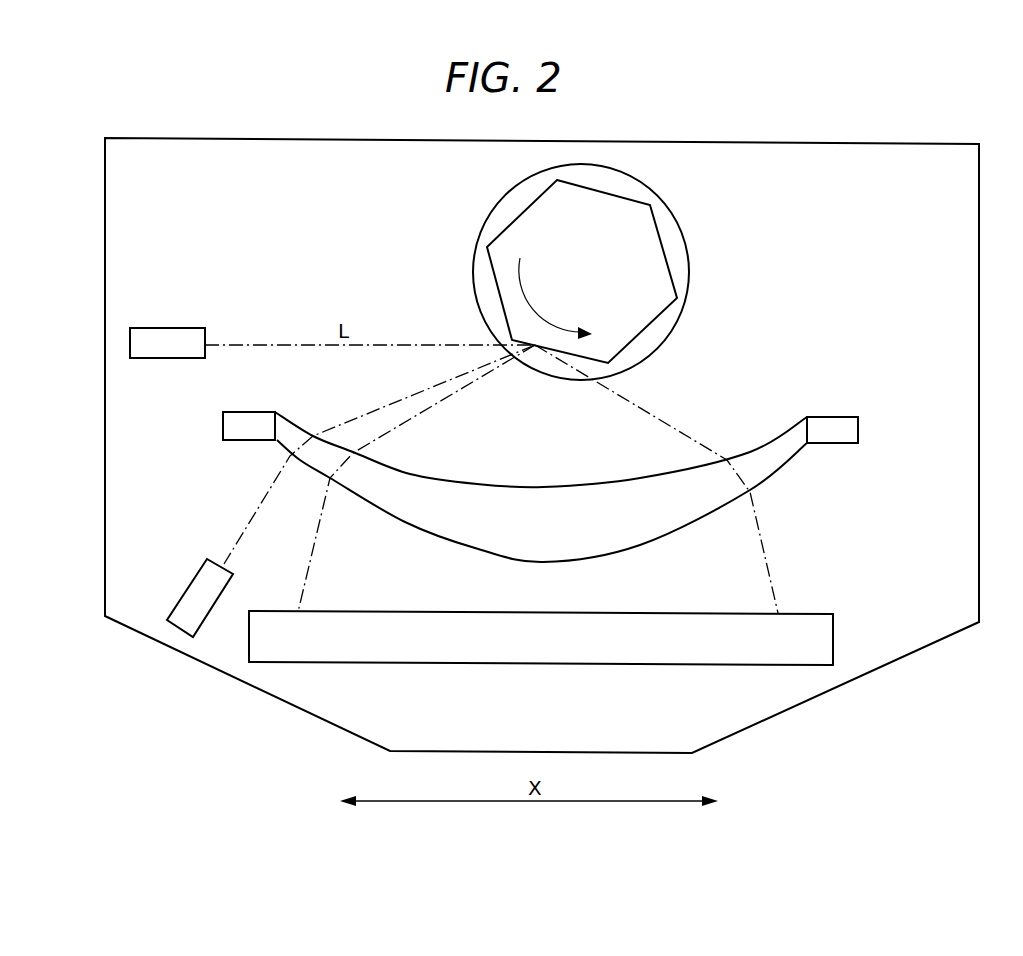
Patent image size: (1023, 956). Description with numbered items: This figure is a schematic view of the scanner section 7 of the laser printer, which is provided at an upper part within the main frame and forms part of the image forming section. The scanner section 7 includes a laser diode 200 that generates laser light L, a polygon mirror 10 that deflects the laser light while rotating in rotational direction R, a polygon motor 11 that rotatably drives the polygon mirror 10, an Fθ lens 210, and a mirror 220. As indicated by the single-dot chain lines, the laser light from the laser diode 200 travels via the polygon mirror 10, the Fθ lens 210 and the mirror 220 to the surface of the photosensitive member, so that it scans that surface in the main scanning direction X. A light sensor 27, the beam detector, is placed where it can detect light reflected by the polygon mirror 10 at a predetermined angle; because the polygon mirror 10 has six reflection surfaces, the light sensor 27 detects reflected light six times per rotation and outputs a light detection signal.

The scanner section 7 is at (899, 141).
The polygon mirror 10 is at (657, 218).
The polygon motor 11 is at (688, 258).
The light sensor (beam detector) 27 is at (187, 580).
The laser diode 200 is at (152, 360).
The Fθ lens 210 is at (838, 416).
The mirror 220 is at (470, 665).